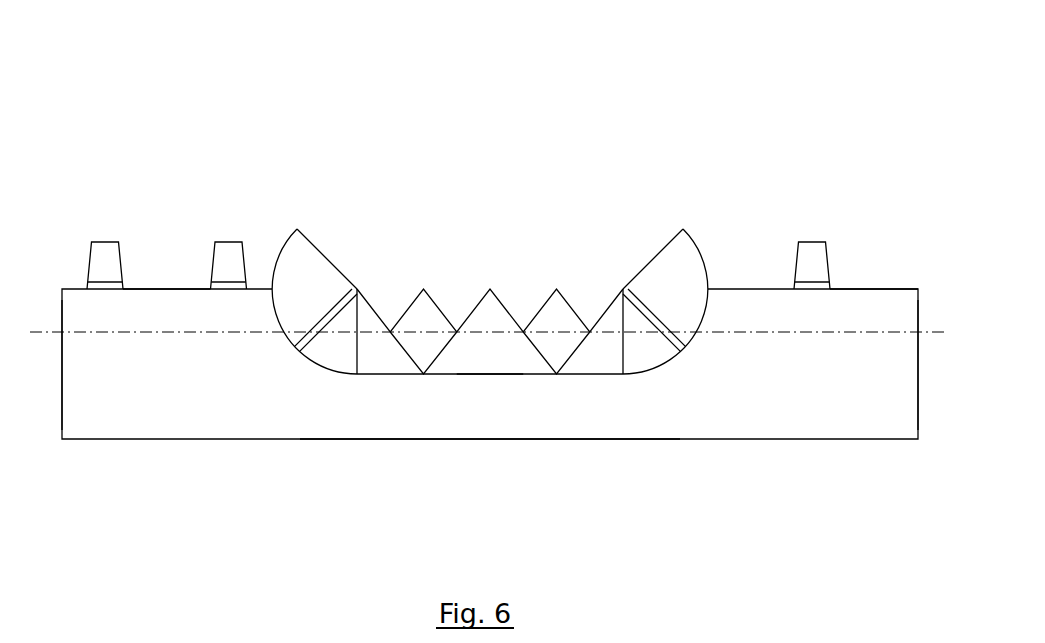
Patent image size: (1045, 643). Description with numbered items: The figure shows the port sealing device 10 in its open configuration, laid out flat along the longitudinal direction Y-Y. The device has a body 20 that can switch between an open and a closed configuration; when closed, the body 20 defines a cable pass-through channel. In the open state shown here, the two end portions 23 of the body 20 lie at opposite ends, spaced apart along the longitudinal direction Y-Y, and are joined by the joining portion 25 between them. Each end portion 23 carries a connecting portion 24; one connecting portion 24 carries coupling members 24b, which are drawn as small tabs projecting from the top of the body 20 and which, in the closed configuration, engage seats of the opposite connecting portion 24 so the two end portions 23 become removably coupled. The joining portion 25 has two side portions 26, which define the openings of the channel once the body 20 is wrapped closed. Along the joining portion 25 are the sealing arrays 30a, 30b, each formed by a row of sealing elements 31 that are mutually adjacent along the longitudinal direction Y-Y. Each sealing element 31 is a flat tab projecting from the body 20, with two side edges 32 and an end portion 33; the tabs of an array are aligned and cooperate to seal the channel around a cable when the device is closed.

The port sealing device 10 is at (368, 156).
The body 20 is at (645, 412).
The end portions 23 is at (133, 412).
The connecting portions 24 is at (150, 288).
The coupling member 24b is at (103, 242).
The joining portion 25 is at (387, 403).
The side portions 26 is at (455, 417).
The sealing array 30a is at (646, 242).
The sealing array 30b is at (552, 268).
The sealing elements 31 is at (563, 338).
The side edges 32 is at (523, 333).
The end portion 33 is at (426, 290).
The longitudinal direction Y-Y is at (200, 333).